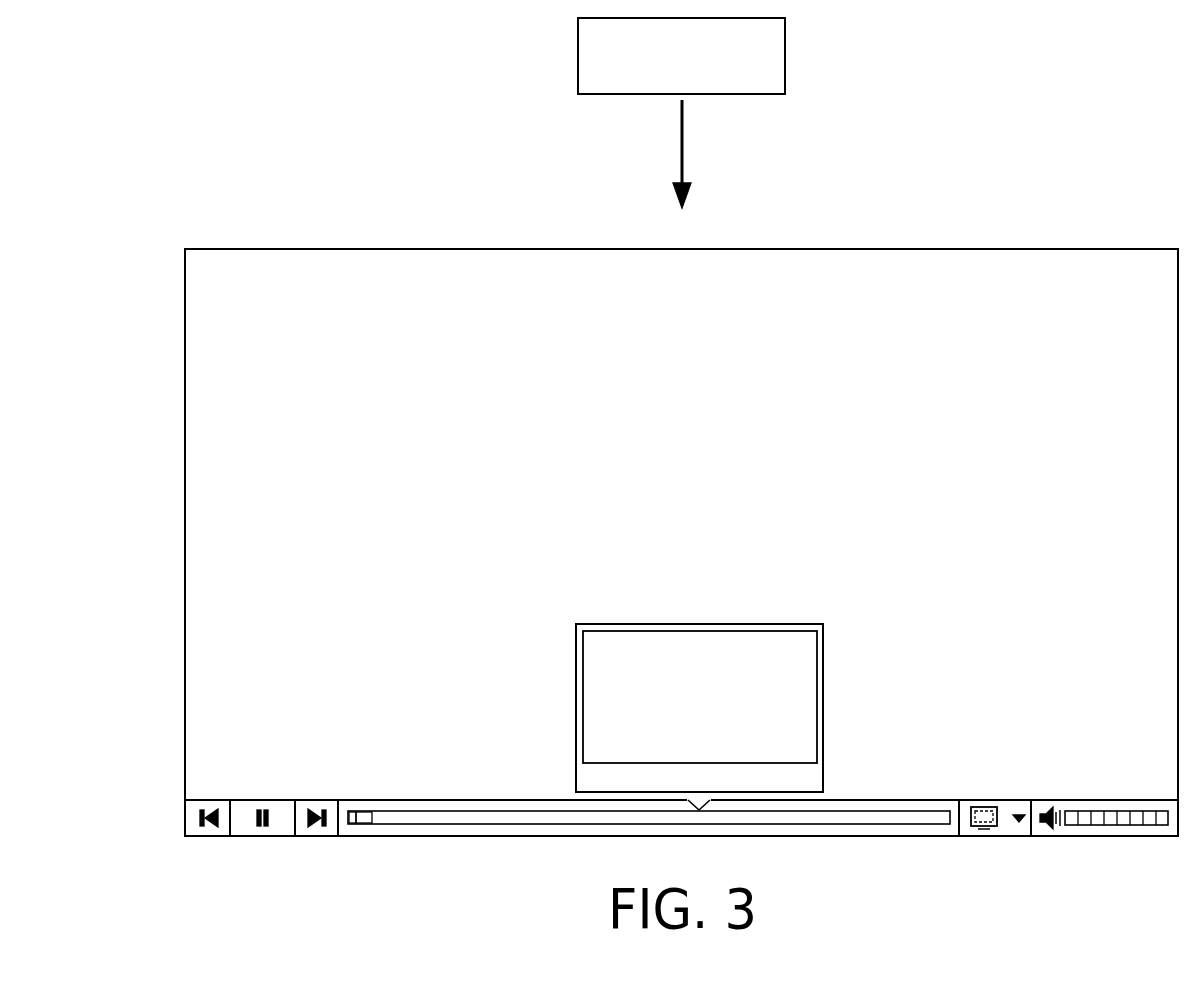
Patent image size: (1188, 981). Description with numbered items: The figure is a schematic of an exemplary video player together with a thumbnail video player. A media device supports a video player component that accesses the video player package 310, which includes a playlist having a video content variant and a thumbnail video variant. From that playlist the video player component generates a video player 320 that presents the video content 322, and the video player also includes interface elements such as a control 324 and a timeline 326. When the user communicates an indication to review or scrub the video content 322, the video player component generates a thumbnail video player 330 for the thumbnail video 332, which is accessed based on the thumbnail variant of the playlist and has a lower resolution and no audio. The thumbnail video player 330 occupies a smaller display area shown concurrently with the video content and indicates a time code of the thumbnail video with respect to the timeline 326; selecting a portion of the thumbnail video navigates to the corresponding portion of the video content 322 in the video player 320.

The video player package 310 is at (578, 56).
The video player 320 is at (227, 249).
The video content 322 is at (685, 505).
The control 324 is at (262, 837).
The timeline 326 is at (438, 823).
The thumbnail video player 330 is at (611, 624).
The thumbnail video 332 is at (700, 697).